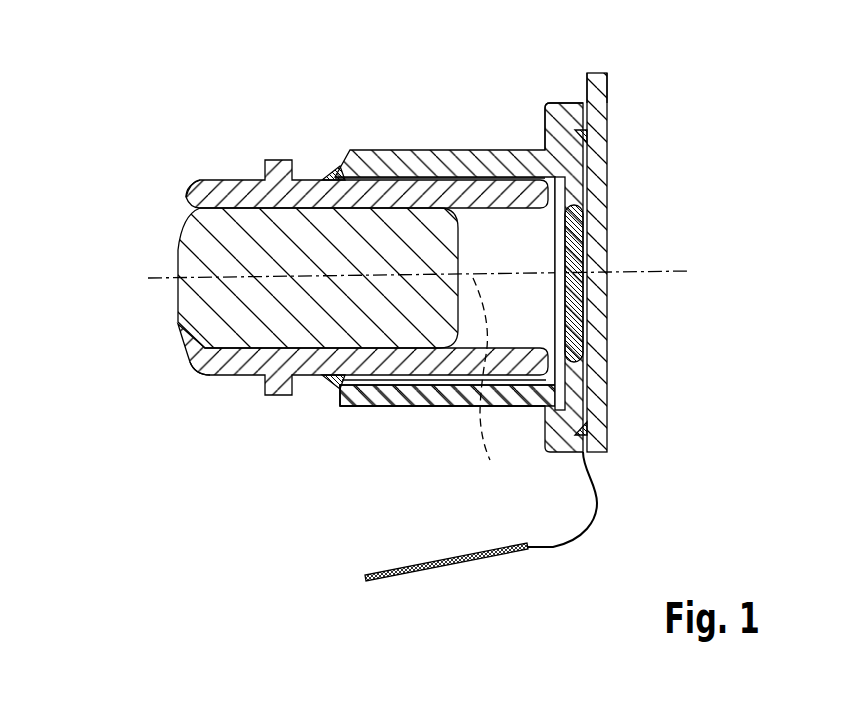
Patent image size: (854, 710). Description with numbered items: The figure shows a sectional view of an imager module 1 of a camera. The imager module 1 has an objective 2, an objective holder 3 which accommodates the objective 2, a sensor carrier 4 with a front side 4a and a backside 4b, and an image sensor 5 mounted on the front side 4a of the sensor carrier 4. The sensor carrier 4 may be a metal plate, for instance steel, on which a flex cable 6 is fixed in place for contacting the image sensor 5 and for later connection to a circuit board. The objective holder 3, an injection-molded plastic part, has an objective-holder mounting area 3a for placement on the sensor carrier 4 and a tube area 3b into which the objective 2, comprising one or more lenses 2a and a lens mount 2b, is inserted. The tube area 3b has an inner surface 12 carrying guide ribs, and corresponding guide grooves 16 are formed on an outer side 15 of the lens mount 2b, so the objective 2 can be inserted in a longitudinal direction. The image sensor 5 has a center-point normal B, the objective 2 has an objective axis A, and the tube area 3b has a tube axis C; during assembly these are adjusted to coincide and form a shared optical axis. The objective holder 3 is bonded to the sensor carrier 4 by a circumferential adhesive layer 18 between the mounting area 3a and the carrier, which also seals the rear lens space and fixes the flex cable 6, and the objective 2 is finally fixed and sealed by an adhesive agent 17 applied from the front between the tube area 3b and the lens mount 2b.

The imager module 1 is at (121, 507).
The objective 2 is at (247, 180).
The lenses 2a is at (184, 340).
The lens mount 2b is at (205, 180).
The objective holder 3 is at (405, 162).
The objective-holder mounting area 3a is at (547, 105).
The tube area 3b is at (418, 408).
The sensor carrier 4 is at (607, 325).
The front side 4a is at (588, 87).
The backside 4b is at (608, 88).
The image sensor 5 is at (588, 240).
The flex cable 6 is at (598, 505).
The inner surface 12 is at (365, 395).
The outer side 15 is at (330, 178).
The guide grooves 16 is at (368, 178).
The adhesive agent 17 is at (322, 390).
The adhesive layer 18 is at (593, 137).
The objective axis A is at (160, 279).
The center-point normal B is at (690, 271).
The tube axis C is at (484, 385).